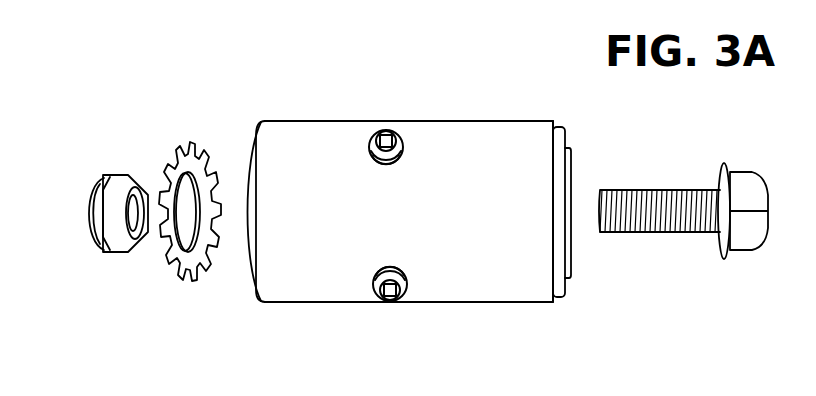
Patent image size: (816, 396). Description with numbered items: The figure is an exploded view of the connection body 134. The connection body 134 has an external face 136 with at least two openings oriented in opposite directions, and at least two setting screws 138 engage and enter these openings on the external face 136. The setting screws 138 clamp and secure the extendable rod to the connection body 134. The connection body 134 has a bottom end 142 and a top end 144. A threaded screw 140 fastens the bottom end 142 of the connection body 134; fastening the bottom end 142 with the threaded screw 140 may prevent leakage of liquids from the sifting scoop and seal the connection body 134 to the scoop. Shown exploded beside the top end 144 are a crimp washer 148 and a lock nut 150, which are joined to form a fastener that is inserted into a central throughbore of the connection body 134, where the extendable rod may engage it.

The connection body 134 is at (489, 331).
The external face 136 is at (490, 148).
The setting screws 138 is at (372, 130).
The threaded screw 140 is at (672, 233).
The bottom end 142 is at (553, 302).
The top end 144 is at (262, 302).
The crimp washer 148 is at (192, 280).
The lock nut 150 is at (96, 248).